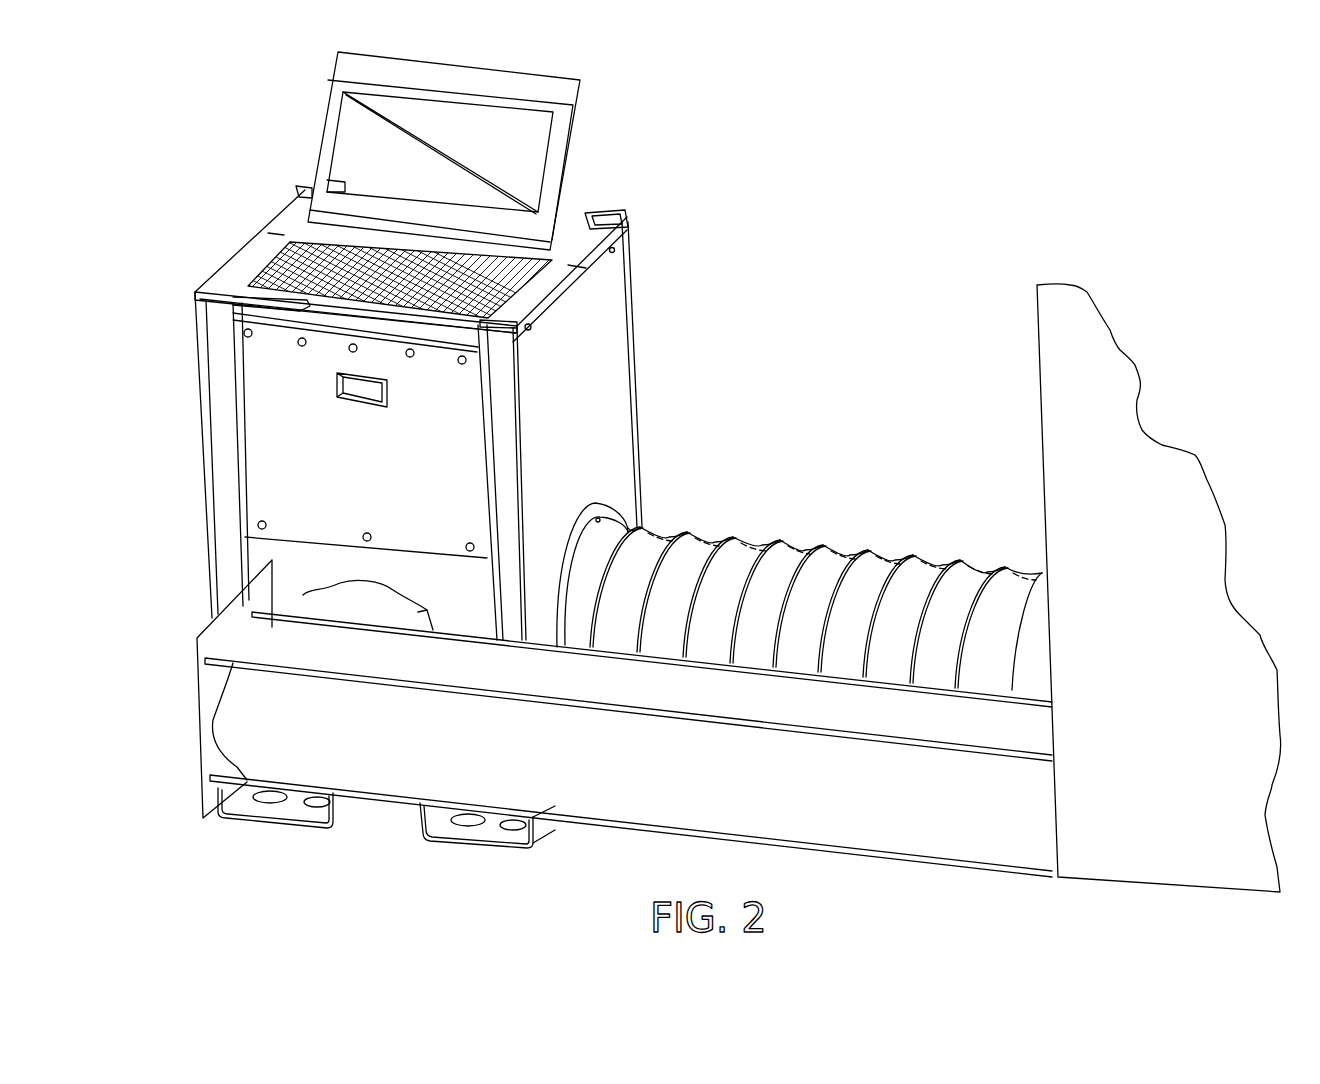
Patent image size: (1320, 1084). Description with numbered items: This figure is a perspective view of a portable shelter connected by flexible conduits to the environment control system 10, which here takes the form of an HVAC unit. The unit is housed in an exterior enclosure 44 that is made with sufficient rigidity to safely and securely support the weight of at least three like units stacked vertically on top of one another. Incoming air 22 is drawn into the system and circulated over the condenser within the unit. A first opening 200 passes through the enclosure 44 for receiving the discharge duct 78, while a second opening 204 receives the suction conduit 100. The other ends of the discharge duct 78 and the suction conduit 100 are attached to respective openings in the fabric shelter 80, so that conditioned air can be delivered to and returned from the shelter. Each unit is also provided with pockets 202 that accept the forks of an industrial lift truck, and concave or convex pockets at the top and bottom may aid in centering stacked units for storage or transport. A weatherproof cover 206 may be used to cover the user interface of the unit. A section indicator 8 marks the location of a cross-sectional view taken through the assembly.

The environment control system 10 is at (255, 450).
The weatherproof cover 206 is at (573, 127).
The enclosure 44 is at (603, 305).
The incoming air 22 is at (837, 374).
The second opening 204 is at (600, 508).
The suction conduit 100 is at (788, 557).
The fabric shelter 80 is at (1176, 660).
The discharge duct 78 is at (422, 760).
The first opening 200 is at (226, 640).
The pockets 202 is at (278, 810).
The section line 8 is at (627, 627).